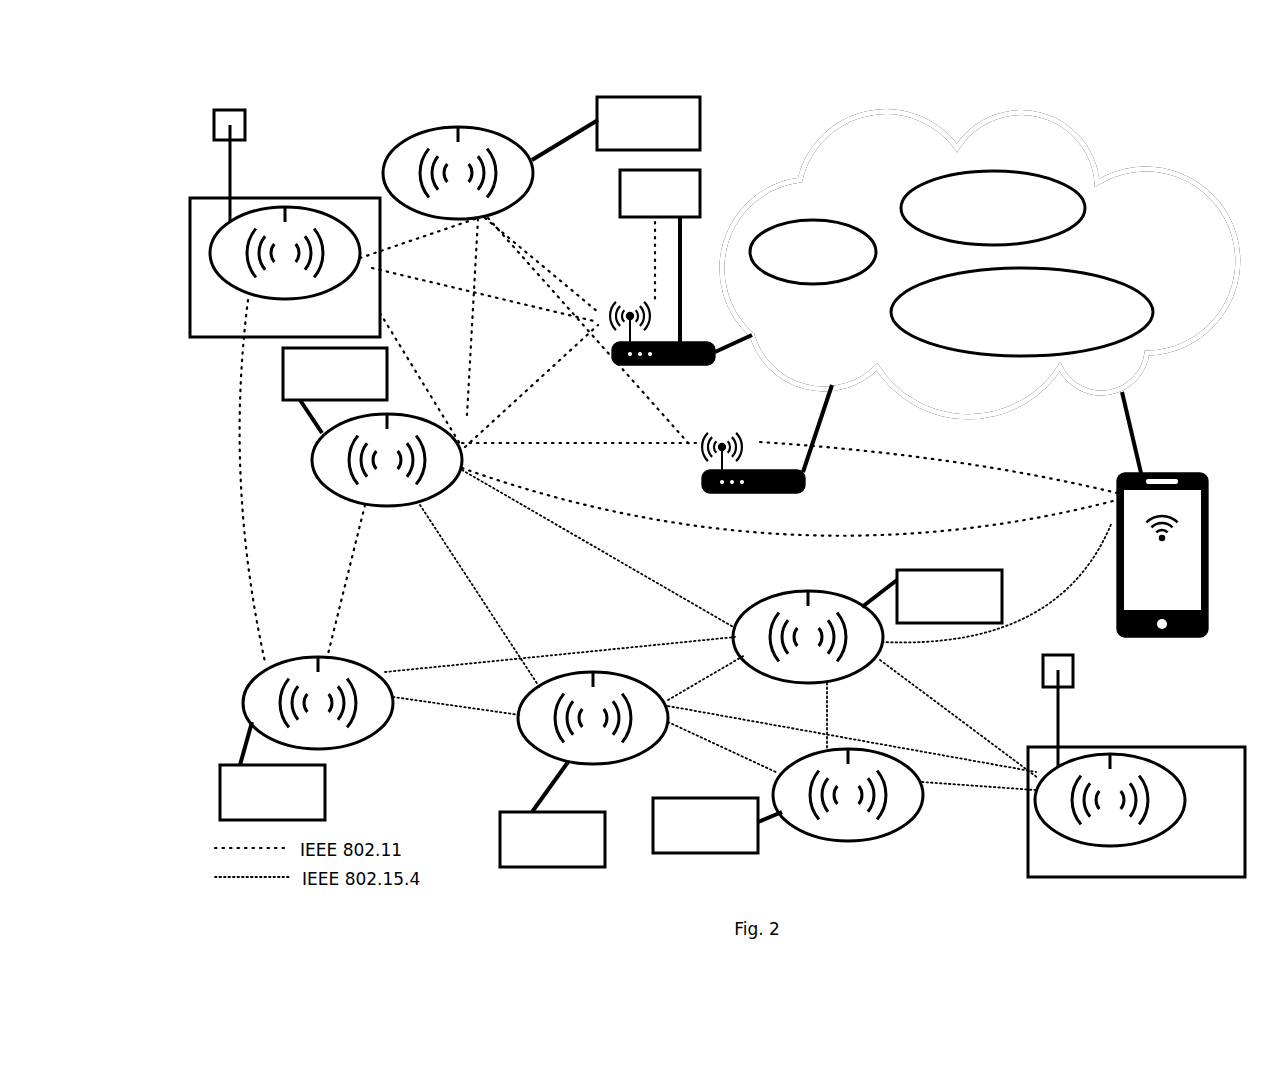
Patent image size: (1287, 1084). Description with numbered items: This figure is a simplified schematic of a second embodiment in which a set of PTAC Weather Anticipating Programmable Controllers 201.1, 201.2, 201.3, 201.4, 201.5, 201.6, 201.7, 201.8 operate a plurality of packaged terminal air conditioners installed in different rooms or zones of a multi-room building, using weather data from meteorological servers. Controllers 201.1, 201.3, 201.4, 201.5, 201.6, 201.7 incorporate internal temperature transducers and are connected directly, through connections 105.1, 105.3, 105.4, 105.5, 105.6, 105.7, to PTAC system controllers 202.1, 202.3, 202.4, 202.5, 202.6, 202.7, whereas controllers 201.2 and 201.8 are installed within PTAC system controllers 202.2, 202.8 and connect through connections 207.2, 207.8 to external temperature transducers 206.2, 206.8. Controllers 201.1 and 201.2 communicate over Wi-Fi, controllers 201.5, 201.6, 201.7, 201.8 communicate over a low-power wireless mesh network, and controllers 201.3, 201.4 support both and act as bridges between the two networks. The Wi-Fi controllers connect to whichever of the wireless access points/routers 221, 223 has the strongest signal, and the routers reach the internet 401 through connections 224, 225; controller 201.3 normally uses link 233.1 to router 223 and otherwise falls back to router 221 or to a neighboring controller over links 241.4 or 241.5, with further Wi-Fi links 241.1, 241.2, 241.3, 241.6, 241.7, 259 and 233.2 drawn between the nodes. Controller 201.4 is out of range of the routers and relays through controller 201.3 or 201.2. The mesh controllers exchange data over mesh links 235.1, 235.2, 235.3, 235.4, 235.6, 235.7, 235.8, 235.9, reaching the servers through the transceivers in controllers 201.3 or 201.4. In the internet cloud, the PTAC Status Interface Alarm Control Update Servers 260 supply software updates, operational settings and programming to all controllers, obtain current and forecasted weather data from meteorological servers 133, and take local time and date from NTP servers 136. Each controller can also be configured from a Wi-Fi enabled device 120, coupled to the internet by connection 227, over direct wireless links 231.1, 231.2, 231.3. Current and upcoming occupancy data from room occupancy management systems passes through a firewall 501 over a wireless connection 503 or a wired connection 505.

The wired connection 105.1 is at (567, 153).
The wired connection 105.3 is at (287, 433).
The wired connection 105.4 is at (216, 737).
The wired connection 105.5 is at (527, 786).
The wired connection 105.6 is at (858, 584).
The wired connection 105.7 is at (788, 836).
The Wi-Fi enabled device 120 is at (1179, 569).
The meteorological servers 133 is at (1024, 214).
The NTP servers 136 is at (813, 274).
The PTAC Weather Anticipating Programmable Controller 201.1 is at (484, 160).
The PTAC Weather Anticipating Programmable Controller 201.2 is at (288, 269).
The PTAC Weather Anticipating Programmable Controller 201.3 is at (406, 470).
The PTAC Weather Anticipating Programmable Controller 201.4 is at (337, 715).
The PTAC Weather Anticipating Programmable Controller 201.5 is at (613, 731).
The PTAC Weather Anticipating Programmable Controller 201.6 is at (823, 650).
The PTAC Weather Anticipating Programmable Controller 201.7 is at (870, 807).
The PTAC Weather Anticipating Programmable Controller 201.8 is at (1134, 812).
The PTAC system controller 202.1 is at (648, 123).
The PTAC system controller 202.2 is at (277, 294).
The PTAC system controller 202.3 is at (335, 374).
The PTAC system controller 202.4 is at (272, 792).
The PTAC system controller 202.5 is at (552, 839).
The PTAC system controller 202.6 is at (949, 596).
The PTAC system controller 202.7 is at (705, 825).
The PTAC system controller 202.8 is at (1136, 793).
The external temperature transducer 206.2 is at (276, 125).
The external temperature transducer 206.8 is at (1106, 671).
The transducer connection 207.2 is at (277, 173).
The transducer connection 207.8 is at (1106, 718).
The wireless access point/router 221 is at (662, 351).
The wireless access point/router 223 is at (777, 481).
The internet connection 224 is at (743, 361).
The internet connection 225 is at (846, 428).
The internet connection 227 is at (1164, 432).
The wireless link 231.1 is at (938, 473).
The wireless link 231.2 is at (781, 392).
The wireless link 231.3 is at (997, 584).
The wireless link 233.1 is at (789, 492).
The wireless link 233.2 is at (581, 418).
The IEEE 802.15.4 wireless mesh network link 235.1 is at (598, 549).
The IEEE 802.15.4 wireless mesh network link 235.2 is at (465, 596).
The IEEE 802.15.4 wireless mesh network link 235.3 is at (560, 637).
The IEEE 802.15.4 wireless mesh network link 235.4 is at (456, 721).
The IEEE 802.15.4 wireless mesh network link 235.6 is at (690, 673).
The IEEE 802.15.4 wireless mesh network link 235.7 is at (852, 739).
The IEEE 802.15.4 wireless mesh network link 235.8 is at (932, 713).
The IEEE 802.15.4 wireless mesh network link 235.9 is at (978, 803).
The wireless link 241.1 is at (541, 262).
The wireless link 241.2 is at (417, 247).
The wireless link 241.3 is at (485, 300).
The wireless link 241.4 is at (456, 317).
The wireless link 241.5 is at (453, 380).
The wireless link 241.6 is at (531, 386).
The wireless link 241.7 is at (282, 481).
The wireless link 259 is at (369, 581).
The PTAC Status Interface Alarm Control Update Servers 260 is at (1046, 312).
The internet 401 is at (980, 276).
The firewall 501 is at (660, 193).
The wireless connection 503 is at (626, 261).
The wired connection 505 is at (702, 279).